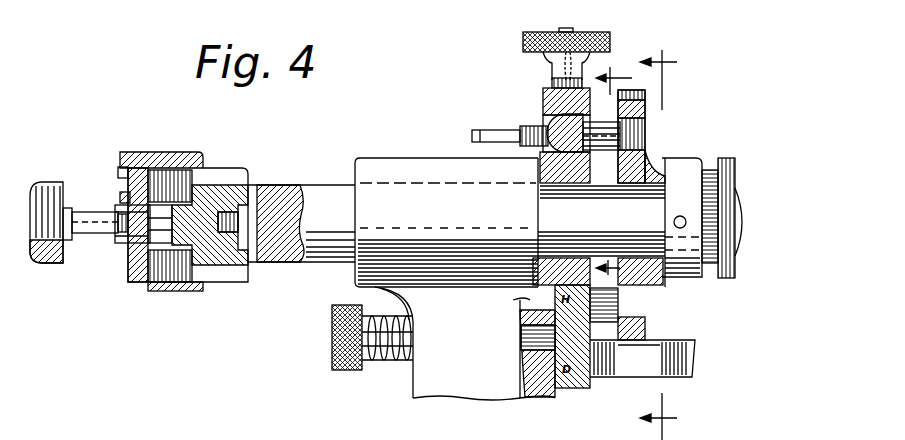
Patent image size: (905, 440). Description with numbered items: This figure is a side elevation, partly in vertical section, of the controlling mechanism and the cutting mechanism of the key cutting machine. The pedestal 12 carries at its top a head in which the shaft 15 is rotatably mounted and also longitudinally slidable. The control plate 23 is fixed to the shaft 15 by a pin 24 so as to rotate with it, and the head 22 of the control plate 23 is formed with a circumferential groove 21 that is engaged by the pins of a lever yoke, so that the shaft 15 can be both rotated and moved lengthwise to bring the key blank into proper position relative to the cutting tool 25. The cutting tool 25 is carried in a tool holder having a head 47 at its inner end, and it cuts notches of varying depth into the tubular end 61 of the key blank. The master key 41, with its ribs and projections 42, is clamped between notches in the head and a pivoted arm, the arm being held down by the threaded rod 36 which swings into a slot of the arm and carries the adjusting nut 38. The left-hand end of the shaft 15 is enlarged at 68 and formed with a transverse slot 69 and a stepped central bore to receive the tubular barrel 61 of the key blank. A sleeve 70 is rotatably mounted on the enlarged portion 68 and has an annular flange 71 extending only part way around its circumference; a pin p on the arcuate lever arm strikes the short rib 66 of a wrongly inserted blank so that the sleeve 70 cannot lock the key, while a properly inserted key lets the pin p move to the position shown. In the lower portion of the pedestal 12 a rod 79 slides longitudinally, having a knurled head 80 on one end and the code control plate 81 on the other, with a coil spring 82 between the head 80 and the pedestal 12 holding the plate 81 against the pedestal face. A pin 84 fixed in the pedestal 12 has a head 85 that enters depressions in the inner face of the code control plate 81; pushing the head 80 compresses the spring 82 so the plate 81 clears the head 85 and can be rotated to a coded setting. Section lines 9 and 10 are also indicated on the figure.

The head 47 is at (42, 195).
The cutting tool 25 is at (86, 224).
The annular flange 71 is at (118, 170).
The pin p is at (122, 197).
The sleeve 70 is at (197, 153).
The transverse slot 69 is at (172, 182).
The enlarged portion 68 is at (237, 173).
The master key 41 is at (540, 133).
The tubular end 61 is at (137, 227).
The short rib 66 is at (133, 233).
The ribs and projections 42 is at (166, 285).
The shaft 15 is at (318, 193).
The pedestal 12 is at (480, 377).
The pin 84 is at (462, 314).
The head 85 is at (513, 305).
The knurled head 80 is at (330, 332).
The rod 79 is at (392, 362).
The coil spring 82 is at (377, 360).
The adjusting nut 38 is at (640, 30).
The threaded rod 36 is at (567, 31).
The control plate 23 is at (647, 103).
The section line 9 is at (614, 171).
The section line 10 is at (674, 244).
The head 22 is at (683, 167).
The pin 24 is at (687, 220).
The circumferential groove 21 is at (712, 165).
The code control plate 81 is at (595, 378).